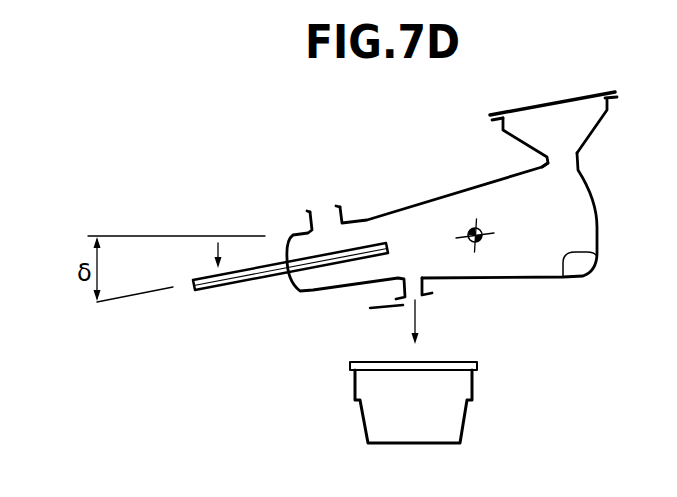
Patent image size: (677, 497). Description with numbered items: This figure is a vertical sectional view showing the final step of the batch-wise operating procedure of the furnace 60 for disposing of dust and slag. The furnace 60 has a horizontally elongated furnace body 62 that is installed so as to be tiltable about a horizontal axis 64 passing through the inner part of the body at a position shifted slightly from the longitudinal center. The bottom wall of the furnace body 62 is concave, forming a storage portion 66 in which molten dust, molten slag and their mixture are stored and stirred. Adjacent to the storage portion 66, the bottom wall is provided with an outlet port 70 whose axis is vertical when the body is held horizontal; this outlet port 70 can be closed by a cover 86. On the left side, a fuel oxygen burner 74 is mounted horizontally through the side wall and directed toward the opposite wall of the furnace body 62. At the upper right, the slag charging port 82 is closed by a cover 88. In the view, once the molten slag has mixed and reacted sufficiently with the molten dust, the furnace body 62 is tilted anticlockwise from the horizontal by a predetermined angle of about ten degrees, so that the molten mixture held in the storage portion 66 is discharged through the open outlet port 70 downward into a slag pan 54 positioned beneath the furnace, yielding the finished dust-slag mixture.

The slag pan 54 is at (443, 415).
The furnace 60 is at (318, 175).
The furnace body 62 is at (532, 286).
The horizontal axis 64 is at (477, 222).
The storage portion 66 is at (597, 254).
The outlet port 70 is at (427, 285).
The fuel oxygen burner 74 is at (317, 268).
The slag charging port 82 is at (593, 135).
The cover 86 is at (393, 309).
The cover 88 is at (573, 92).